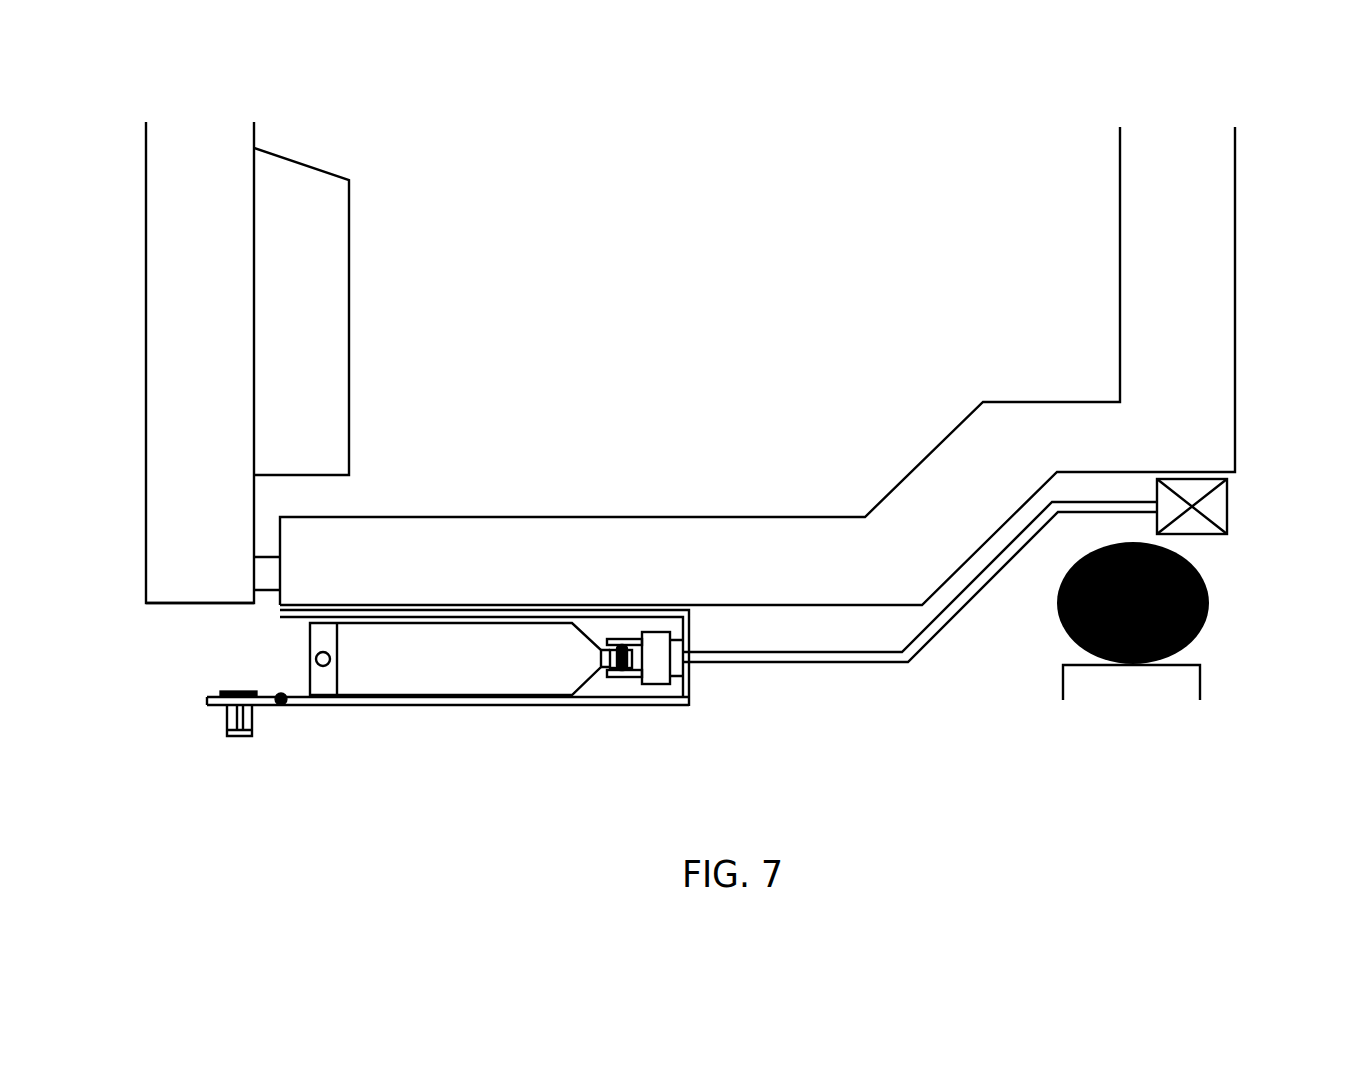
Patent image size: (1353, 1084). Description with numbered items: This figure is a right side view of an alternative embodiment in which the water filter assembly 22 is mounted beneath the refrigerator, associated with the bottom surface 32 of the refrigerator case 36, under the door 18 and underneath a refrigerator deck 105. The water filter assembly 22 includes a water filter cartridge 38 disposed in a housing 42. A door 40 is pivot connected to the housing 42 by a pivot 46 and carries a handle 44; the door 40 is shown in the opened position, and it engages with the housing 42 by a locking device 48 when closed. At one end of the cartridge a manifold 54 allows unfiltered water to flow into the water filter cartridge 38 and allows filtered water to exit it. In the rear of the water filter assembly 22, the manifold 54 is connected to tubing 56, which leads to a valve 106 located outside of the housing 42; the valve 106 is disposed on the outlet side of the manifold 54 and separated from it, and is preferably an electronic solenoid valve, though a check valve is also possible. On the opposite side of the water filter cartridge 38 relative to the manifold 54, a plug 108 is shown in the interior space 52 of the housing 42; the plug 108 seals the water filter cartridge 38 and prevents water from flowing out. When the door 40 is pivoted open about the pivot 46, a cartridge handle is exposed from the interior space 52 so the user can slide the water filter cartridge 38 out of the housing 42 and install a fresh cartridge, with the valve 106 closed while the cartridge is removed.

The door 18 is at (150, 498).
The bottom surface 32 is at (160, 605).
The refrigerator case 36 is at (481, 517).
The refrigerator deck 105 is at (622, 547).
The valve 106 is at (1228, 510).
The water filter assembly 22 is at (646, 650).
The housing 42 is at (693, 693).
The door 40 is at (207, 700).
The locking device 48 is at (237, 690).
The handle 44 is at (233, 737).
The pivot 46 is at (283, 706).
The water filter cartridge 38 is at (437, 680).
The interior space 52 is at (297, 662).
The plug 108 is at (330, 659).
The manifold 54 is at (657, 685).
The tubing 56 is at (823, 665).